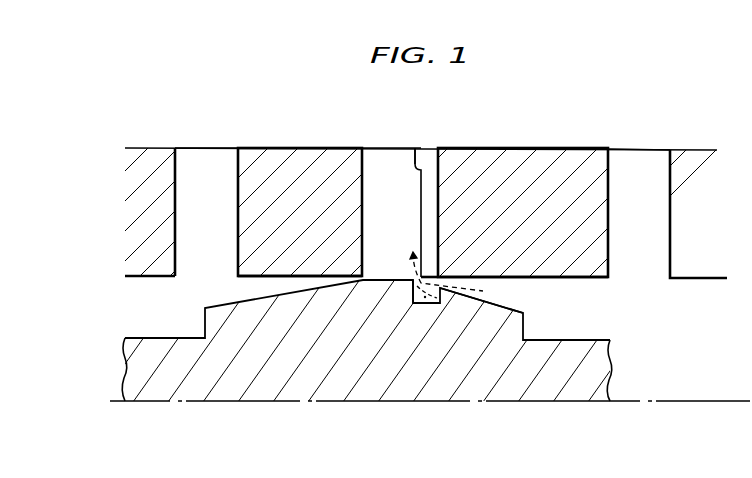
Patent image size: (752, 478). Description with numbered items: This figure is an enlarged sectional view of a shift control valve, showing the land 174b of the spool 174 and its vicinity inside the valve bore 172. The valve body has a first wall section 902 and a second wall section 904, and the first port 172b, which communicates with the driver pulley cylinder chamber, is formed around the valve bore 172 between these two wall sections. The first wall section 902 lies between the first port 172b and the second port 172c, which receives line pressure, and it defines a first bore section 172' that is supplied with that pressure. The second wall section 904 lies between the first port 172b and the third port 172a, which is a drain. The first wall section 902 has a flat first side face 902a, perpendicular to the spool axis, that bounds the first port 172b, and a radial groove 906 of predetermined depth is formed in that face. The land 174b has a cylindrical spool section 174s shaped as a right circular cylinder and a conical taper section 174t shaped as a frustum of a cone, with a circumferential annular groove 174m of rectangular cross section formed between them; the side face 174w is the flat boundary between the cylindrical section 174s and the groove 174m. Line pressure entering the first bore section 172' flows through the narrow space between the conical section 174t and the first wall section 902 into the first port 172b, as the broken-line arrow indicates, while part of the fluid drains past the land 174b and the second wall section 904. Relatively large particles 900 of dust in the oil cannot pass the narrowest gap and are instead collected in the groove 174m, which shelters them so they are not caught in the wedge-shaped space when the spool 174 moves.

The valve bore 172 is at (426, 236).
The third port 172a is at (212, 160).
The first port 172b is at (403, 162).
The second port 172c is at (643, 160).
The first bore section 172' is at (537, 301).
The second wall section 904 is at (310, 152).
The first wall section 902 is at (520, 155).
The first side face 902a is at (418, 162).
The radial groove 906 is at (432, 188).
The spool 174 is at (138, 343).
The land 174b is at (297, 395).
The cylindrical spool section 174s is at (383, 277).
The side face 174w is at (413, 293).
The circumferential annular groove 174m is at (422, 304).
The conical taper section 174t is at (497, 303).
The particles 900 is at (437, 302).